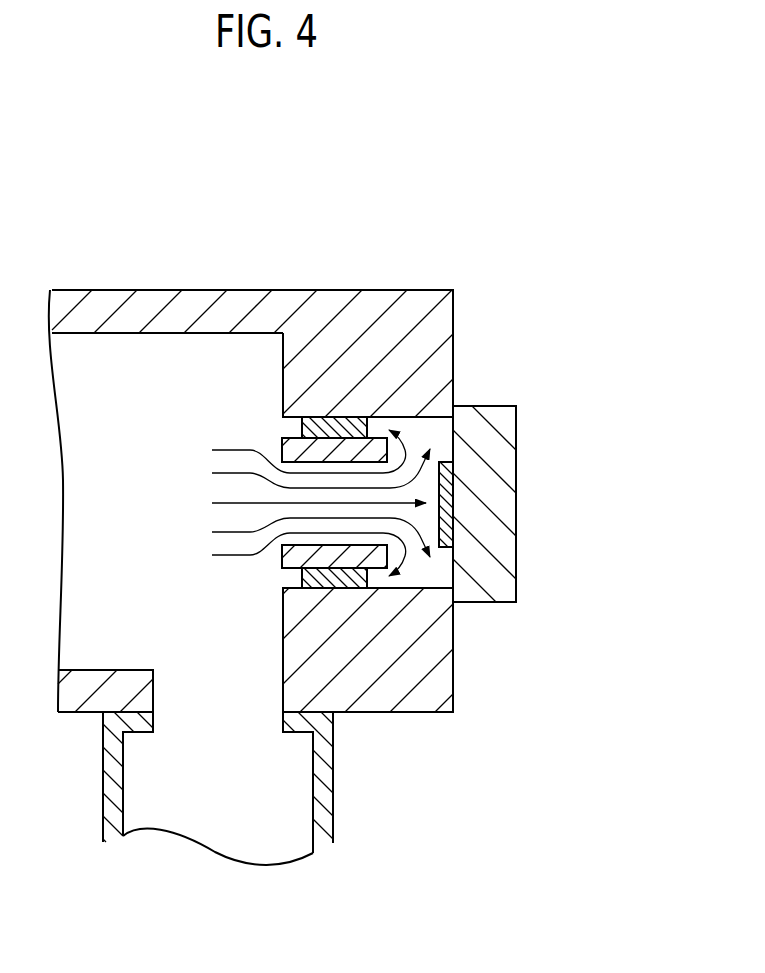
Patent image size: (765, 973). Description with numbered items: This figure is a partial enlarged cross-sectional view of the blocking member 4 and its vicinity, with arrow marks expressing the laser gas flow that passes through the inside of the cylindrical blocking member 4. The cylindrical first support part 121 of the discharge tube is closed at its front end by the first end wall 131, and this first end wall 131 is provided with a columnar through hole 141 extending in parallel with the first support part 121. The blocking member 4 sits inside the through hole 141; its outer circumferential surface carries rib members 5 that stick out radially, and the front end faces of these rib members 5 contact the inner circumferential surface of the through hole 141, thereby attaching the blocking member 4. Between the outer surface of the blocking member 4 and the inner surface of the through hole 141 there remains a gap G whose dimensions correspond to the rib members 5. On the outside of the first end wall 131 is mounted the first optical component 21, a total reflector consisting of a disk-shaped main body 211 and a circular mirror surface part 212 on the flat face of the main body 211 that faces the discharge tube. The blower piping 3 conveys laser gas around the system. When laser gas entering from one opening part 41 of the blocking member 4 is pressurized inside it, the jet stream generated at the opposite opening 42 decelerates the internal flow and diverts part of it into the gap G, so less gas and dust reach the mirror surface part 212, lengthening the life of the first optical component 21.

The first support part 121 is at (107, 300).
The first end wall 131 is at (442, 323).
The columnar through hole 141 is at (412, 580).
The blocking member 4 is at (282, 443).
The opening part 41 is at (287, 550).
The opposite opening 42 is at (378, 548).
The rib member 5 is at (338, 428).
The gap G is at (377, 427).
The first optical component 21 is at (533, 520).
The main body 211 is at (508, 423).
The mirror surface part 212 is at (444, 517).
The blower piping 3 is at (337, 803).